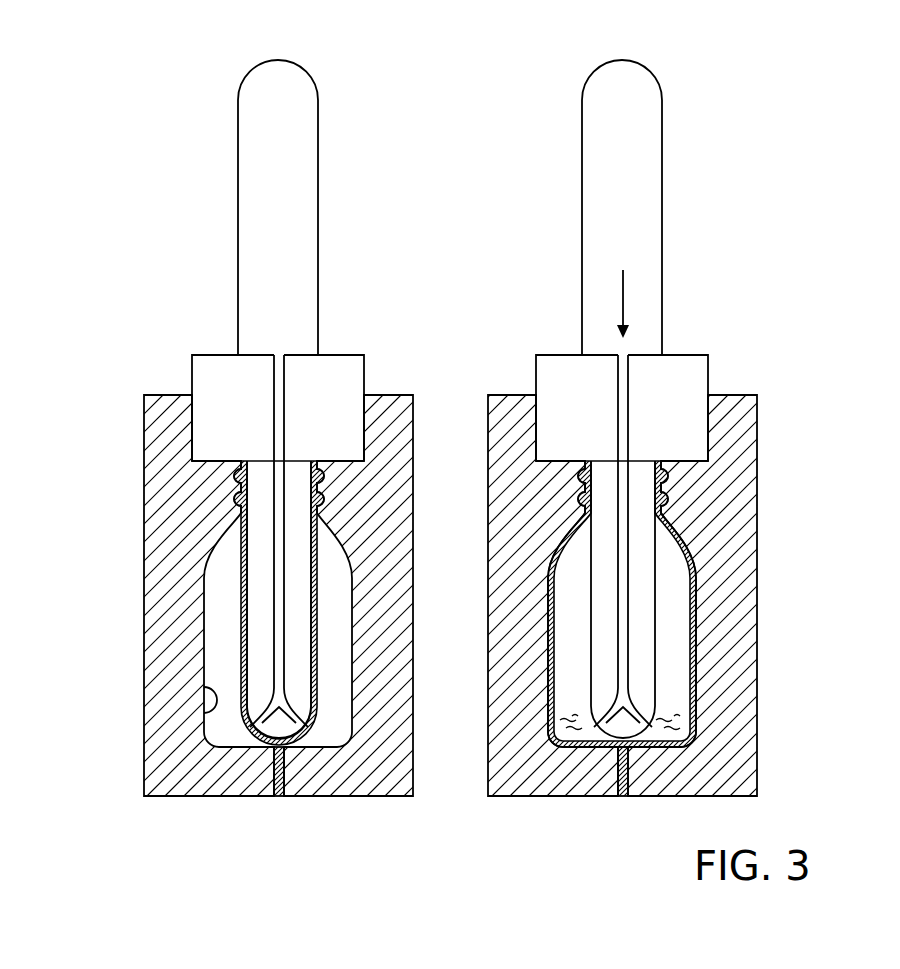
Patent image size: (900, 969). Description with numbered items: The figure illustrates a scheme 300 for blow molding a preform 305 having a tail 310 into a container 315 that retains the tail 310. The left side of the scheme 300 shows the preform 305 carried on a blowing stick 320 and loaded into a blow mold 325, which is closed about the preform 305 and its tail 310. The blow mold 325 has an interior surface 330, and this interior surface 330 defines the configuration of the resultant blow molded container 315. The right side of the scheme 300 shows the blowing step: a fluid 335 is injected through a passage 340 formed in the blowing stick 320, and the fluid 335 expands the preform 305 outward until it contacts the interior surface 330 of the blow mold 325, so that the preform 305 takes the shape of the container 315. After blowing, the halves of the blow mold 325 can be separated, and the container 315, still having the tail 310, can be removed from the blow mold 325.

The scheme 300 is at (157, 82).
The preform 305 is at (243, 648).
The tail 310 is at (267, 796).
The container 315 is at (697, 707).
The blowing stick 320 is at (319, 228).
The blow mold 325 is at (143, 662).
The interior surface 330 is at (207, 713).
The fluid 335 is at (623, 291).
The passage 340 is at (630, 400).